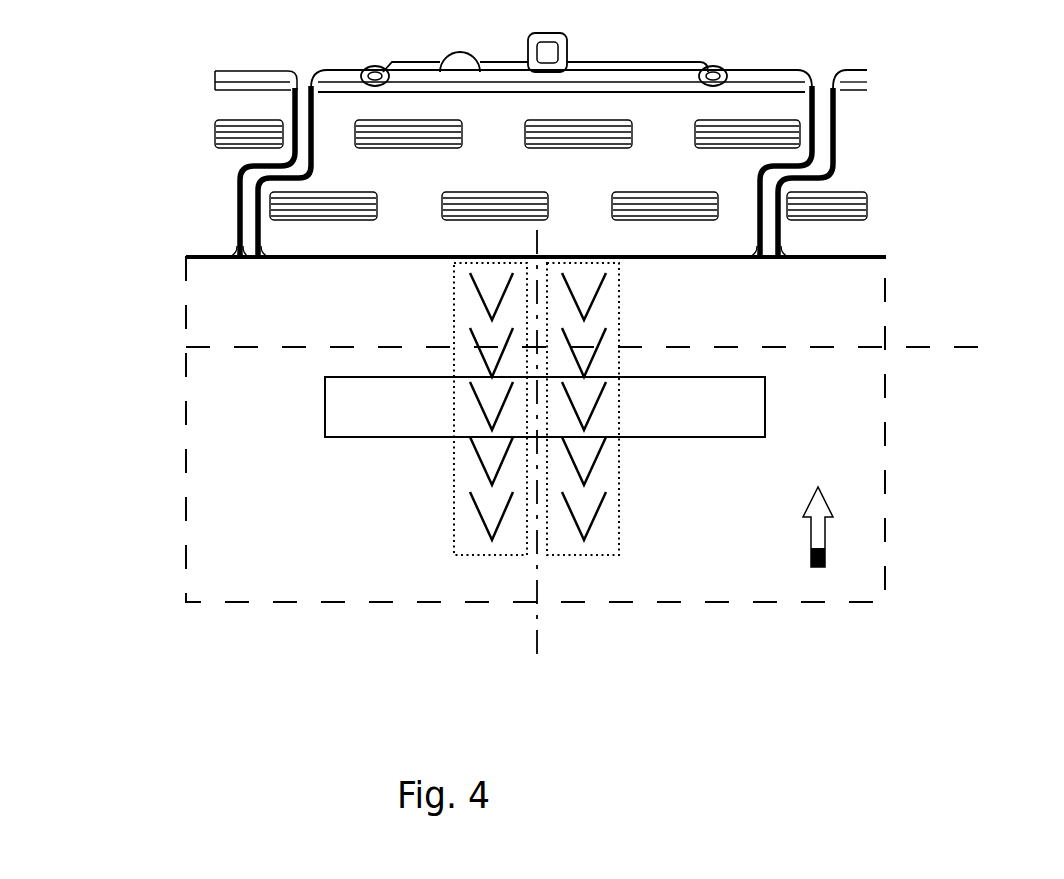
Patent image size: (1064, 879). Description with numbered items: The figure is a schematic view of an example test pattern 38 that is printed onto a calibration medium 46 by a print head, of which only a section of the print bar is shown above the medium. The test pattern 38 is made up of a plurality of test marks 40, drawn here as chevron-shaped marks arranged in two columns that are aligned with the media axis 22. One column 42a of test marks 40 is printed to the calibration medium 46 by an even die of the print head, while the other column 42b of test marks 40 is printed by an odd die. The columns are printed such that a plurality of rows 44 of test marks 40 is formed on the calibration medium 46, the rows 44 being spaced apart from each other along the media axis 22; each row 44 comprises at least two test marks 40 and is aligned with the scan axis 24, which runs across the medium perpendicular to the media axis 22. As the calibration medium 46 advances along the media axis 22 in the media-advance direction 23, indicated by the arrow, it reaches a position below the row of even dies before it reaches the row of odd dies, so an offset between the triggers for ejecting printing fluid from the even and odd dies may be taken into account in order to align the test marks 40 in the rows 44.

The media axis 22 is at (536, 472).
The media-advance direction 23 is at (826, 536).
The scan axis 24 is at (612, 348).
The test pattern 38 is at (625, 505).
The test marks 40 is at (455, 455).
The column of test marks 42a is at (482, 555).
The column of test marks 42b is at (593, 555).
The row of test marks 44 is at (765, 405).
The calibration medium 46 is at (272, 602).